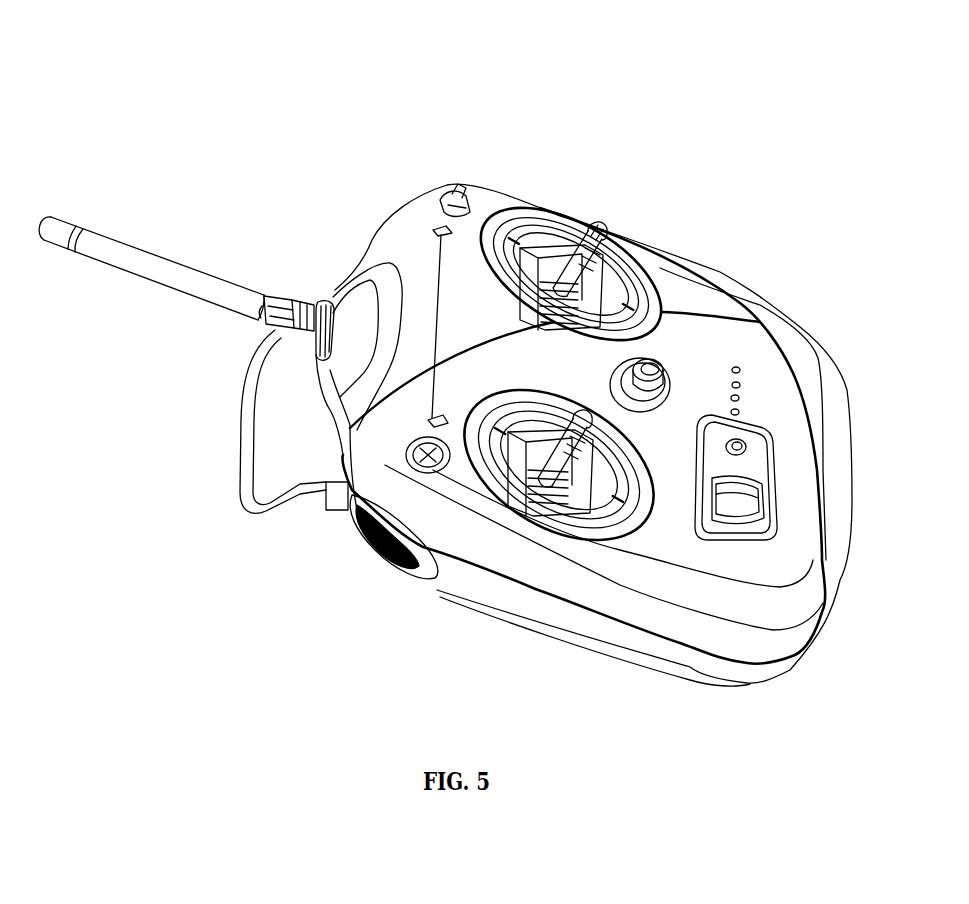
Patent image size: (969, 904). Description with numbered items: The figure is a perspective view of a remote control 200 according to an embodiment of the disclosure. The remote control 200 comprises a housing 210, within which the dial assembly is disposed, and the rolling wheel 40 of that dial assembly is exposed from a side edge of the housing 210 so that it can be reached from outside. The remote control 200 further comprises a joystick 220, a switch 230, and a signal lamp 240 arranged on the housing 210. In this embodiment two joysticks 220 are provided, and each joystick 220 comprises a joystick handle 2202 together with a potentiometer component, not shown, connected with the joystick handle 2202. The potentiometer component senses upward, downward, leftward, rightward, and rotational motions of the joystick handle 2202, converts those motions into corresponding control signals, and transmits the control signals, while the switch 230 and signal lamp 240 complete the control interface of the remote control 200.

The remote control 200 is at (552, 42).
The housing 210 is at (677, 580).
The joystick 220 is at (505, 197).
The joystick handle 2202 is at (597, 223).
The switch 230 is at (750, 450).
The signal lamp 240 is at (663, 363).
The rolling wheel 40 is at (362, 543).